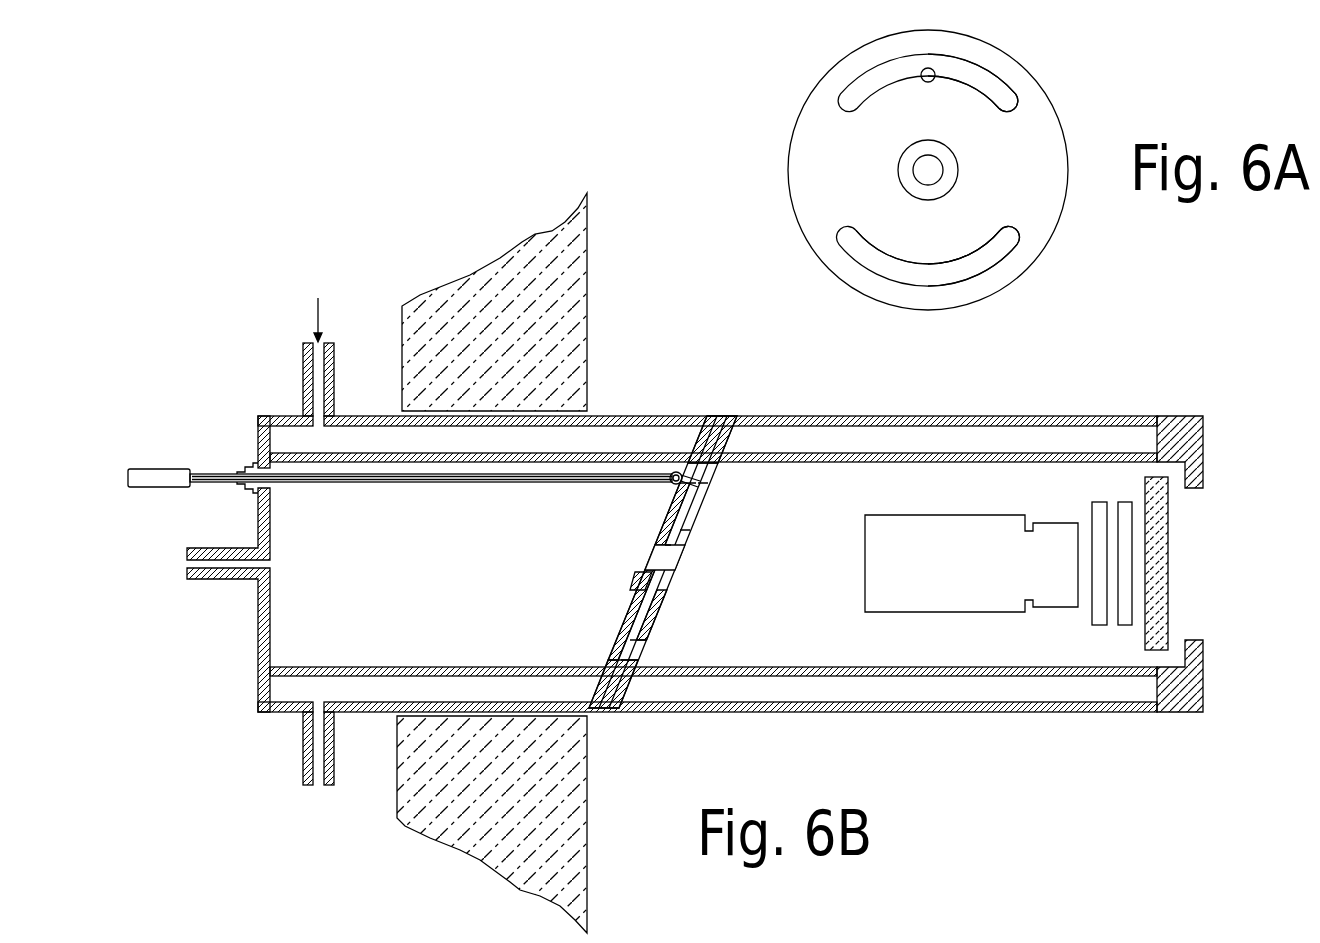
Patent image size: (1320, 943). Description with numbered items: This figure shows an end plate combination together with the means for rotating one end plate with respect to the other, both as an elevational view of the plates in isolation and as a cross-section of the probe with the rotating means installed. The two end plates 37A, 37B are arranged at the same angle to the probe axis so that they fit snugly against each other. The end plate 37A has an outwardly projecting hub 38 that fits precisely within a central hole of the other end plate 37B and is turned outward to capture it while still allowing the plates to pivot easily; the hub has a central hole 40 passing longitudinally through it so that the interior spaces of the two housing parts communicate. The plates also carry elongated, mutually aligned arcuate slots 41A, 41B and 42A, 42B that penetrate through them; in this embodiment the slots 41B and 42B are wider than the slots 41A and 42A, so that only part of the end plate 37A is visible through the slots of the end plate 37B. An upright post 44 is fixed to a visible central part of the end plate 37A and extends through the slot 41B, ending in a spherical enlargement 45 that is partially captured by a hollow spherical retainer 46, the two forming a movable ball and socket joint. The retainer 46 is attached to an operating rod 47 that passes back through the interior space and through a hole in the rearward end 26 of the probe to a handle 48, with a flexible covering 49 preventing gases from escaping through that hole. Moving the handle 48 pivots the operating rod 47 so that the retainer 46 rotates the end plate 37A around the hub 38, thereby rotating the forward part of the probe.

In FIG. 6B, the rearward end 26 is at (258, 618).
In FIG. 6A, the end plate 37A is at (893, 262).
In FIG. 6B, the end plate 37A is at (690, 520).
In FIG. 6A, the end plate 37B is at (807, 135).
In FIG. 6B, the end plate 37B is at (635, 613).
In FIG. 6A, the hub 38 is at (903, 170).
In FIG. 6B, the hub 38 is at (640, 585).
In FIG. 6A, the central hole 40 is at (930, 172).
In FIG. 6B, the central hole 40 is at (652, 556).
In FIG. 6A, the arcuate slot 41A is at (895, 68).
In FIG. 6B, the arcuate slot 41A is at (703, 495).
In FIG. 6A, the arcuate slot 41B is at (995, 77).
In FIG. 6B, the arcuate slot 41B is at (687, 509).
In FIG. 6A, the arcuate slot 42A is at (965, 273).
In FIG. 6B, the arcuate slot 42A is at (632, 645).
In FIG. 6A, the arcuate slot 42B is at (838, 248).
In FIG. 6B, the arcuate slot 42B is at (620, 660).
In FIG. 6B, the upright post 44 is at (703, 488).
In FIG. 6A, the spherical enlargement 45 is at (932, 82).
In FIG. 6B, the spherical enlargement 45 is at (697, 455).
In FIG. 6B, the hollow spherical retainer 46 is at (672, 483).
In FIG. 6B, the operating rod 47 is at (308, 483).
In FIG. 6B, the handle 48 is at (148, 476).
In FIG. 6B, the flexible covering 49 is at (245, 466).